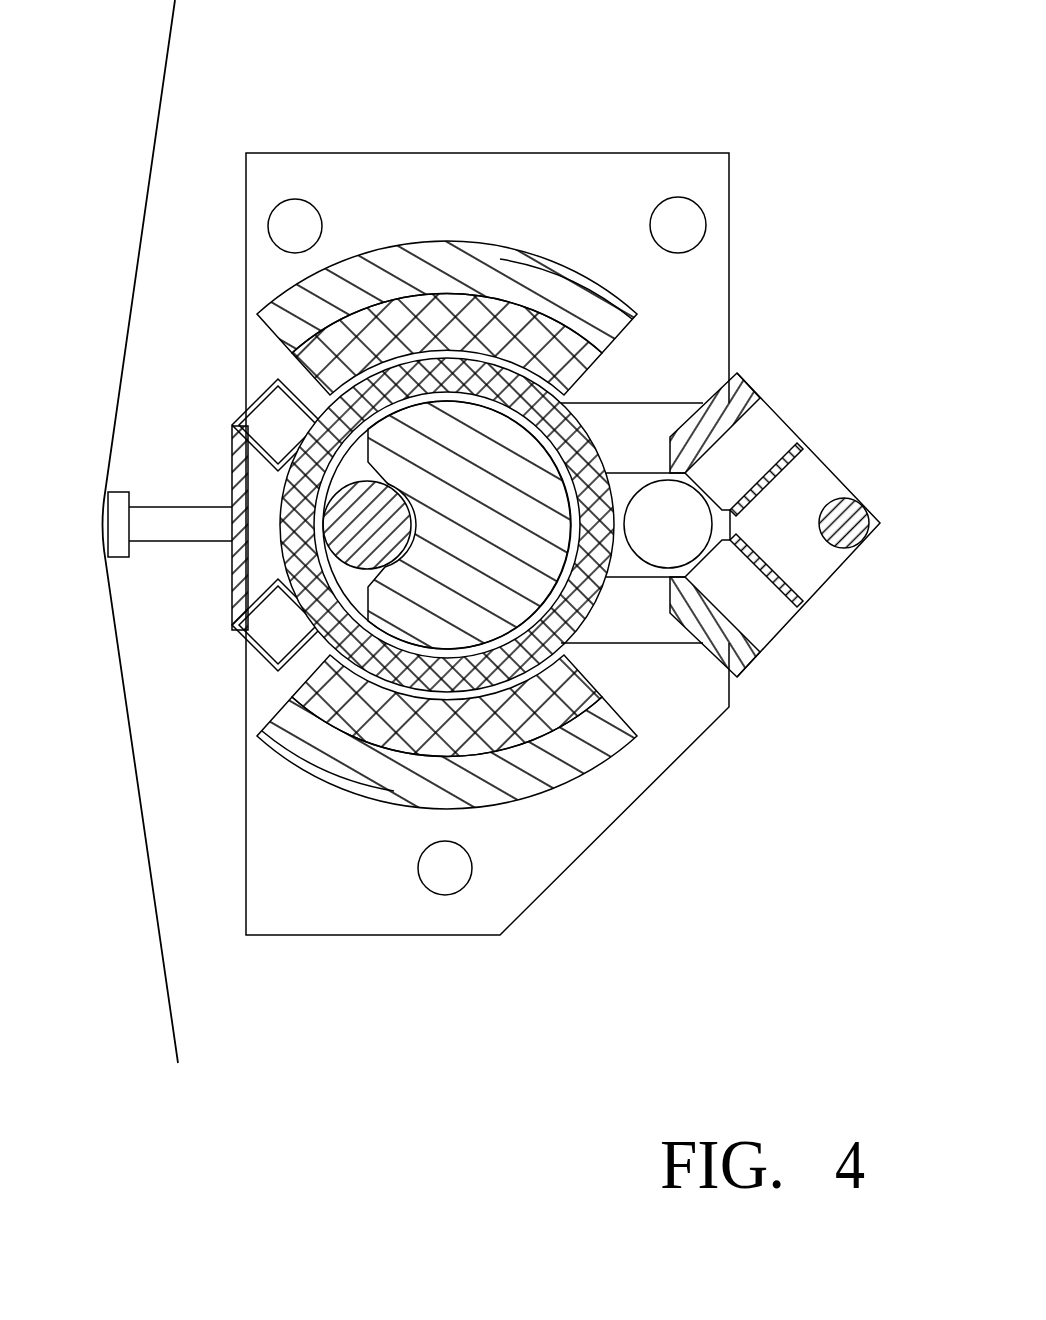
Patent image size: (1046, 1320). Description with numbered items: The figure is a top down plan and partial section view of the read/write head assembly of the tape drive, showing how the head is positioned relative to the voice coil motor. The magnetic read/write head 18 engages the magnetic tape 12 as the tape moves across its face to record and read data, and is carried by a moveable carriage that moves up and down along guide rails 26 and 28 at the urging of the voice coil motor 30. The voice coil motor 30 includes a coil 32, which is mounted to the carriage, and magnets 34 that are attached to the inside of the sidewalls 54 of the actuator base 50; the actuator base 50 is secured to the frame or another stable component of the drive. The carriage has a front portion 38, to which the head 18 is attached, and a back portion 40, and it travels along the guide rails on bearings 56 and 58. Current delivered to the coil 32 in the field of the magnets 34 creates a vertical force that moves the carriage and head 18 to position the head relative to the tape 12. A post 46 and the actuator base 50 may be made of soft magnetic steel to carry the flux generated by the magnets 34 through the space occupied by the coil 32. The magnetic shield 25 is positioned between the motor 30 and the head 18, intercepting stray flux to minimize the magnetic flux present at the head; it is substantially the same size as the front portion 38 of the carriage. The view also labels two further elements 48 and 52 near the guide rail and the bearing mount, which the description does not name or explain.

The magnetic tape 12 is at (155, 138).
The magnetic read/write head 18 is at (105, 527).
The magnetic shield 25 is at (238, 477).
The guide rail 26 is at (390, 565).
The guide rail 28 is at (660, 488).
The voice coil motor 30 is at (605, 670).
The coil 32 is at (595, 460).
The magnets 34 is at (568, 377).
The front portion 38 is at (262, 567).
The back portion 40 is at (880, 523).
The post 46 is at (583, 608).
The key 48 is at (417, 522).
The actuator base 50 is at (565, 855).
The clamp 52 is at (889, 471).
The sidewalls 54 is at (563, 272).
The bearing 56 is at (268, 420).
The bearing 58 is at (778, 420).